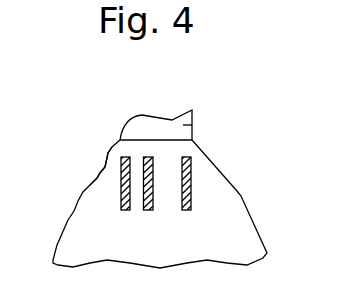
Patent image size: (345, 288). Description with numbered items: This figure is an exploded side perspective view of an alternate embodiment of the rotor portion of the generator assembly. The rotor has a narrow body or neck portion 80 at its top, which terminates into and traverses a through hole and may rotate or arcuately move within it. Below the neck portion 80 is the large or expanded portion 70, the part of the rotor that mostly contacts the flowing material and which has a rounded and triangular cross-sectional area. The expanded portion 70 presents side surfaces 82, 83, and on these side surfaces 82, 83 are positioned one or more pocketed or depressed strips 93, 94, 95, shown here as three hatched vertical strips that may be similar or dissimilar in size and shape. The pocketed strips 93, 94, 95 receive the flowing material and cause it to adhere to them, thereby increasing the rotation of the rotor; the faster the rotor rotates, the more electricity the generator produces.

The expanded portion 70 is at (238, 192).
The neck portion 80 is at (192, 125).
The side surface 82 is at (212, 248).
The side surface 83 is at (100, 173).
The pocketed strip 93 is at (123, 158).
The pocketed strip 94 is at (147, 157).
The pocketed strip 95 is at (191, 171).